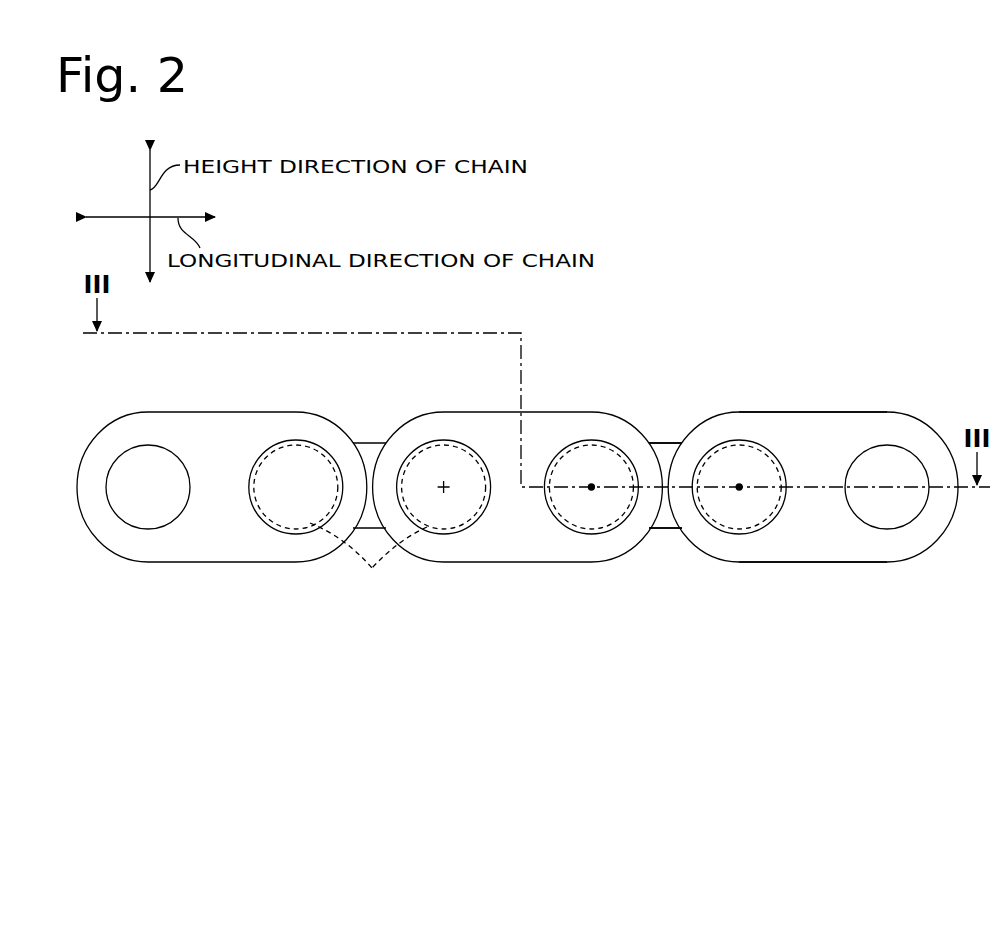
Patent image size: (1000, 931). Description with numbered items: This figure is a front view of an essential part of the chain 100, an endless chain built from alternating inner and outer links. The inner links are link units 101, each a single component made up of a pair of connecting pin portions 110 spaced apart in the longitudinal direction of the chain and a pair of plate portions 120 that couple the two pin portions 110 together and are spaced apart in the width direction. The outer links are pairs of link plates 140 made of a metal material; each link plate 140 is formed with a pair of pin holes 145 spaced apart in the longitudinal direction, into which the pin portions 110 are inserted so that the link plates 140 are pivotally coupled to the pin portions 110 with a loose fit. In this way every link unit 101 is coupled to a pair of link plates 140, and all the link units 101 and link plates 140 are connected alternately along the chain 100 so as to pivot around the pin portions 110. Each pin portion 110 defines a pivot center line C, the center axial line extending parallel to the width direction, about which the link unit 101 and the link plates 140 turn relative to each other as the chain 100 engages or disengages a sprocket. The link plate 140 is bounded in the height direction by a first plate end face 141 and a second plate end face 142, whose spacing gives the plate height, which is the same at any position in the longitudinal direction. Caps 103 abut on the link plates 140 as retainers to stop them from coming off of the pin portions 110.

The chain 100 is at (620, 321).
The link unit 101 is at (667, 421).
The cap 103 is at (447, 527).
The connecting pin portion 110 is at (372, 568).
The plate portion 120 is at (371, 442).
The link plate 140 is at (219, 568).
The first plate end face 141 is at (806, 564).
The second plate end face 142 is at (828, 411).
The pin hole 145 is at (888, 455).
The pivot center line C is at (444, 486).